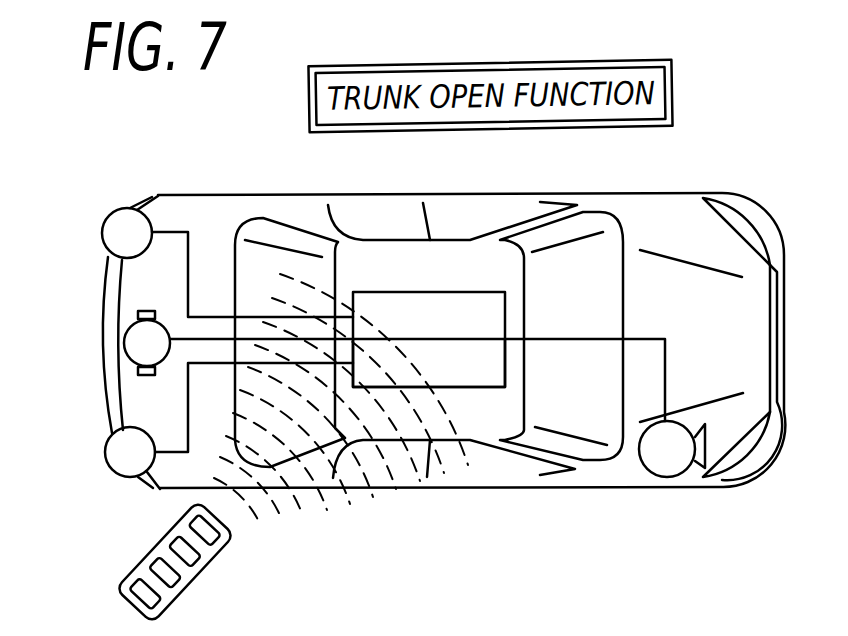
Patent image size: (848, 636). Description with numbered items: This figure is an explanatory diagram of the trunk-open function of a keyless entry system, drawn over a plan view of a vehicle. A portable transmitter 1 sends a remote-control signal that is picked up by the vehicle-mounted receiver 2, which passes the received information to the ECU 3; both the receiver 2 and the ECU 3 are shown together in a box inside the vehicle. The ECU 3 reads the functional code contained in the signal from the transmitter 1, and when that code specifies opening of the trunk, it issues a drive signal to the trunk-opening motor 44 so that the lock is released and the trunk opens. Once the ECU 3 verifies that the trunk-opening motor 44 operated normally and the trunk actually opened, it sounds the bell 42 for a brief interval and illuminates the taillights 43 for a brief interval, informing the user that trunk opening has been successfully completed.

The transmitter 1 is at (195, 592).
The vehicle-mounted receiver 2 is at (429, 363).
The ECU 3 is at (429, 339).
The bell 42 is at (667, 477).
The taillights 43 is at (105, 222).
The trunk-opening motor 44 is at (124, 343).